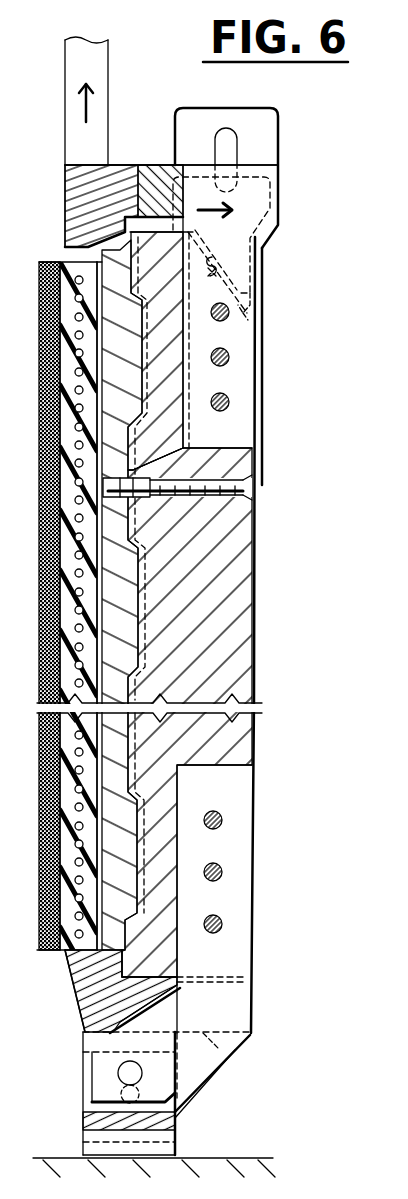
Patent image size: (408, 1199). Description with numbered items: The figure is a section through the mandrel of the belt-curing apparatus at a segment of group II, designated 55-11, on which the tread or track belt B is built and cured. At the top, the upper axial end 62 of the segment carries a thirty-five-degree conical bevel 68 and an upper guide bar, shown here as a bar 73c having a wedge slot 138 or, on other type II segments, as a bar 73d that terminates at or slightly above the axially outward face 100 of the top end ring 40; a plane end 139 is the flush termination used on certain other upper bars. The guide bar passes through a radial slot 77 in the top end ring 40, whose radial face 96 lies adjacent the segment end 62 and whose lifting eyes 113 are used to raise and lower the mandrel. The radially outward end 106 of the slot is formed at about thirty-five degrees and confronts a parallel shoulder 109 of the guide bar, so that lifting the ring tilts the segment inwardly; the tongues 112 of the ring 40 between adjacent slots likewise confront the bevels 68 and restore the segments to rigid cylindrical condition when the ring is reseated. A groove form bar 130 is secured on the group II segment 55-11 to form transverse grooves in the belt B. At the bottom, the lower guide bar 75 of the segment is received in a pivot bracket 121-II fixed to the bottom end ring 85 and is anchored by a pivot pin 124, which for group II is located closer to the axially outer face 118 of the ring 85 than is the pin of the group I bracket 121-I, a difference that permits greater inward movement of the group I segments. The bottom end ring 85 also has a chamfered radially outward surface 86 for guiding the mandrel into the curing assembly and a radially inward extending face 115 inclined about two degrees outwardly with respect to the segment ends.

The lifting eye 113 is at (100, 57).
The radially outward end of slot 106 is at (147, 215).
The shoulder of guide bar 109 is at (143, 220).
The radial face 96 is at (66, 160).
The top end ring 40 is at (77, 197).
The tread belt or track belt B is at (57, 264).
The axially outward face 100 is at (186, 166).
The wedge slot 138 is at (230, 140).
The guide bar 73c is at (268, 132).
The plane end 139 is at (262, 167).
The guide bar 73d is at (270, 210).
The tongue 112 is at (250, 263).
The bevel 68 is at (262, 303).
The axial end of segment 62 is at (247, 463).
The groove form bar 130 is at (122, 570).
The segment of group II 55-11 is at (210, 585).
The lower guide bar 75 is at (232, 927).
The radially inward extending face 115 is at (222, 975).
The radially outward surface 86 is at (72, 987).
The bottom end ring 85 is at (92, 995).
The pivot pin 124 is at (122, 1073).
The pivot bracket 121-II is at (92, 1118).
The pivot bracket 121-I is at (177, 1148).
The radial slot 77 is at (157, 1000).
The axially outer face 118 is at (247, 1043).